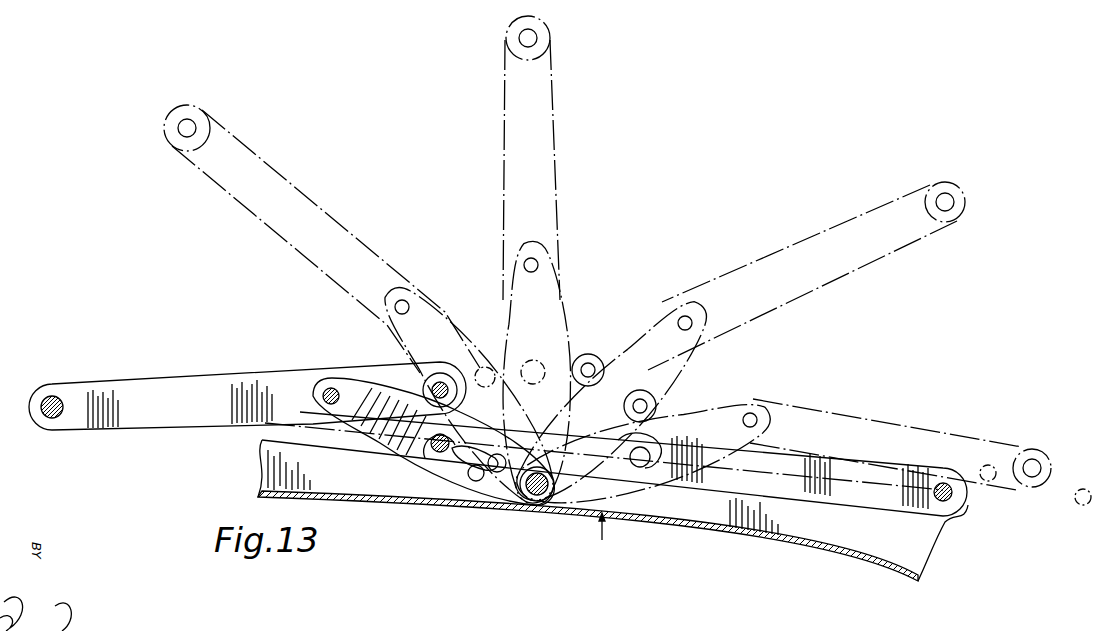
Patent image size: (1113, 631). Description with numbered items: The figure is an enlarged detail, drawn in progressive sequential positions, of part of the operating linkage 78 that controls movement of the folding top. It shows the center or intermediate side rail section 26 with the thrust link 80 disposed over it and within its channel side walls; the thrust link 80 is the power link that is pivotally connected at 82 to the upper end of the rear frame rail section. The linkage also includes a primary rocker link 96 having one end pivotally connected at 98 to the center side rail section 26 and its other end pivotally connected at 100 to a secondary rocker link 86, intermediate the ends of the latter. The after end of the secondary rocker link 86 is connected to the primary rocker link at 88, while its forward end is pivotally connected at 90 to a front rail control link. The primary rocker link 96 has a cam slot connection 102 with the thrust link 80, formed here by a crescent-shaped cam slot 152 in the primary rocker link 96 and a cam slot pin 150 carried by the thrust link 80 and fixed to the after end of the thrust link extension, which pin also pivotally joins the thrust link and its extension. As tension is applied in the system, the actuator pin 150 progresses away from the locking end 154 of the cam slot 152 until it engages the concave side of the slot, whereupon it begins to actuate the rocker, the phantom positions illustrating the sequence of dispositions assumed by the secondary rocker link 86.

The center side rail section 26 is at (700, 508).
The operating linkage 78 is at (600, 538).
The thrust link 80 is at (787, 488).
The pivot connection of thrust link 82 is at (940, 500).
The secondary rocker link 86 is at (505, 258).
The pivot connection of secondary rocker link after end 88 is at (442, 381).
The pivot connection to front rail control link 90 is at (52, 396).
The primary rocker link 96 is at (163, 418).
The pivot connection of primary rocker link 98 is at (538, 502).
The pivot connection between rocker links 100 is at (333, 388).
The cam slot connection 102 is at (493, 481).
The cam slot pin 150 is at (424, 474).
The cam slot 152 is at (468, 482).
The locking end of cam slot 154 is at (424, 450).